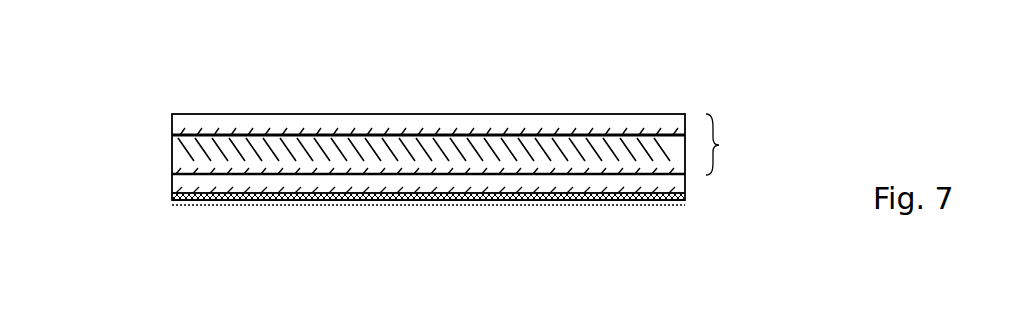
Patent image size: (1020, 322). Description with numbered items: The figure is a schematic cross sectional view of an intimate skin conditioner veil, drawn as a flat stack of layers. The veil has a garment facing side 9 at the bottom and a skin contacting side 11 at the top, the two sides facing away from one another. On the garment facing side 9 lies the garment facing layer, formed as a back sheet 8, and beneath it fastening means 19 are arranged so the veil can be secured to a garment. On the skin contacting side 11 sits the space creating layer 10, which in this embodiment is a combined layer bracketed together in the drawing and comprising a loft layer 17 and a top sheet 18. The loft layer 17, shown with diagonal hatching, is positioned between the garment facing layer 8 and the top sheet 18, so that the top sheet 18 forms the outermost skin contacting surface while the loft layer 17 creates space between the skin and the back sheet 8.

The back sheet 8 is at (172, 180).
The garment facing side 9 is at (254, 203).
The space creating layer 10 is at (734, 144).
The skin contacting side 11 is at (581, 115).
The loft layer 17 is at (172, 155).
The top sheet 18 is at (172, 124).
The fastening means 19 is at (172, 196).